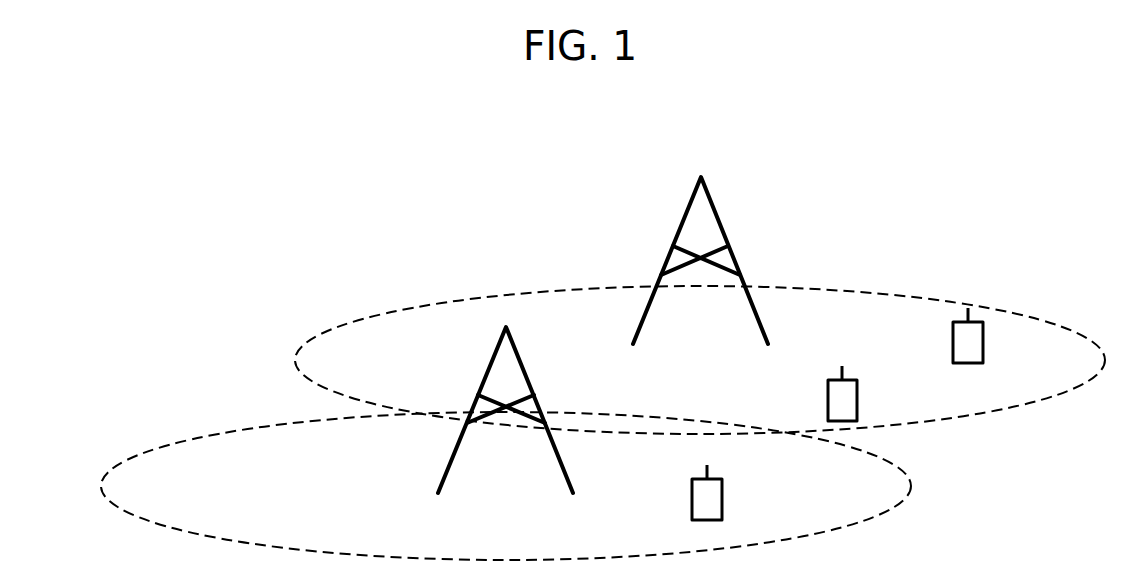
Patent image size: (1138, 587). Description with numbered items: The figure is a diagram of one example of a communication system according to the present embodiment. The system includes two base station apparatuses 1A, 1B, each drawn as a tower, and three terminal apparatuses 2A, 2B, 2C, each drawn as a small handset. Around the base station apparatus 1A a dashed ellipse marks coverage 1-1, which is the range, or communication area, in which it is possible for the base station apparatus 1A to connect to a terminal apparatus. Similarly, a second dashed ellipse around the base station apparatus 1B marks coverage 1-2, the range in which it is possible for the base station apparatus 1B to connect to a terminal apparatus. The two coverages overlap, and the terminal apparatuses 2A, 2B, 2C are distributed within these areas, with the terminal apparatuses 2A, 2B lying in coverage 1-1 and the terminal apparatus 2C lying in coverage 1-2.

The coverage 1-1 is at (400, 310).
The coverage 1-2 is at (187, 438).
The base station apparatus 1A is at (681, 221).
The base station apparatus 1B is at (488, 368).
The terminal apparatus 2A is at (985, 333).
The terminal apparatus 2B is at (858, 390).
The terminal apparatus 2C is at (723, 490).